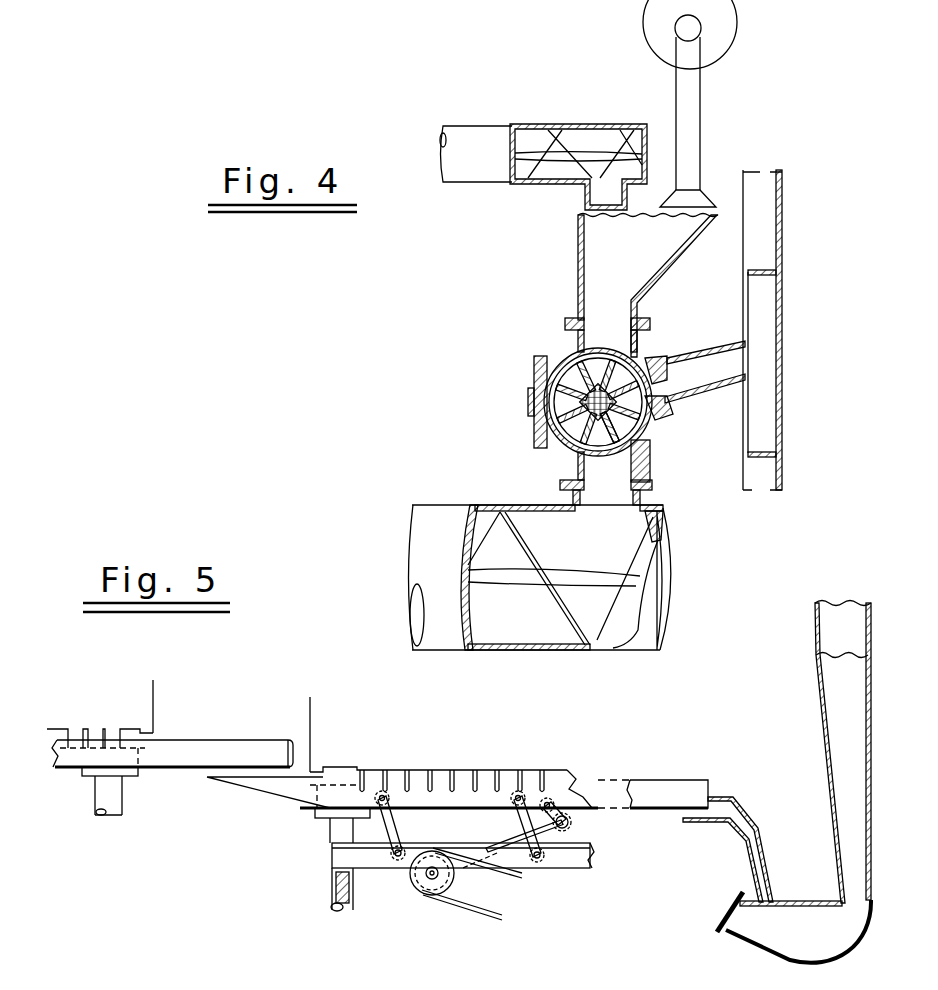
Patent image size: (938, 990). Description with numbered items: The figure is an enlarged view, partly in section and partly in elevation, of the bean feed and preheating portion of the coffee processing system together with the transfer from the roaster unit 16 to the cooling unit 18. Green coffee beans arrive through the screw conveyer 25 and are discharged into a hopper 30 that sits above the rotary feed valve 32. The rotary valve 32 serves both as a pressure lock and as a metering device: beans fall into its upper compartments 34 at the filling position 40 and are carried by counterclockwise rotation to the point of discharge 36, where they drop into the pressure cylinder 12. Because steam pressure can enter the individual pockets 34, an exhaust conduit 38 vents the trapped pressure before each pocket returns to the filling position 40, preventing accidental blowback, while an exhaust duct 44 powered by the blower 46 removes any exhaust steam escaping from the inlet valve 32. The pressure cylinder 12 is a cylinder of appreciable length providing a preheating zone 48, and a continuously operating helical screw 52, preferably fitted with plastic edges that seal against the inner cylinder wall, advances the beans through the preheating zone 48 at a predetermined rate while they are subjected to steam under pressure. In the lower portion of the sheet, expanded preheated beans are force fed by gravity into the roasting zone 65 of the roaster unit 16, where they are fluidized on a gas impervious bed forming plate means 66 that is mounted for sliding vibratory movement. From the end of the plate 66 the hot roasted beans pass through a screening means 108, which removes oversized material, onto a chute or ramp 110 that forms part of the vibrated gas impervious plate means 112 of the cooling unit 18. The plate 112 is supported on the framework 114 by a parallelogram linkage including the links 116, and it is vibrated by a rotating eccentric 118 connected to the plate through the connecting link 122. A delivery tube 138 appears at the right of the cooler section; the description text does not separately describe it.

In FIG. 4, the pressure cylinder 12 is at (614, 652).
In FIG. 4, the screw conveyer 25 is at (568, 126).
In FIG. 4, the hopper 30 is at (582, 260).
In FIG. 4, the rotary feed valve 32 is at (550, 412).
In FIG. 4, the upper compartments 34 is at (633, 428).
In FIG. 4, the point of discharge 36 is at (583, 470).
In FIG. 4, the exhaust conduit 38 is at (697, 360).
In FIG. 4, the filling position 40 is at (597, 364).
In FIG. 4, the exhaust duct 44 is at (690, 121).
In FIG. 4, the blower 46 is at (722, 43).
In FIG. 4, the preheating zone 48 is at (532, 627).
In FIG. 4, the helical screw 52 is at (582, 615).
In FIG. 5, the roaster unit 16 is at (163, 703).
In FIG. 5, the cooling unit 18 is at (305, 708).
In FIG. 5, the roasting zone 65 is at (80, 753).
In FIG. 5, the bed forming plate means 66 is at (165, 768).
In FIG. 5, the screening means 108 is at (253, 763).
In FIG. 5, the chute or ramp 110 is at (237, 781).
In FIG. 5, the plate means 112 is at (650, 780).
In FIG. 5, the framework 114 is at (567, 860).
In FIG. 5, the links 116 is at (535, 838).
In FIG. 5, the rotating eccentric 118 is at (423, 893).
In FIG. 5, the connecting link 122 is at (550, 826).
In FIG. 5, the delivery tube 138 is at (816, 668).